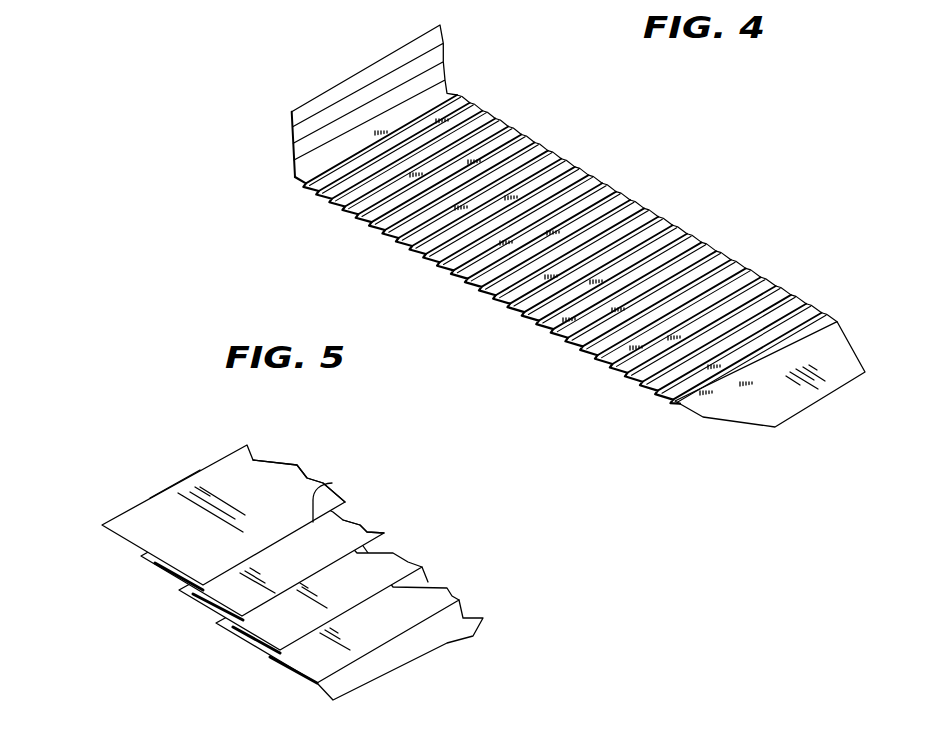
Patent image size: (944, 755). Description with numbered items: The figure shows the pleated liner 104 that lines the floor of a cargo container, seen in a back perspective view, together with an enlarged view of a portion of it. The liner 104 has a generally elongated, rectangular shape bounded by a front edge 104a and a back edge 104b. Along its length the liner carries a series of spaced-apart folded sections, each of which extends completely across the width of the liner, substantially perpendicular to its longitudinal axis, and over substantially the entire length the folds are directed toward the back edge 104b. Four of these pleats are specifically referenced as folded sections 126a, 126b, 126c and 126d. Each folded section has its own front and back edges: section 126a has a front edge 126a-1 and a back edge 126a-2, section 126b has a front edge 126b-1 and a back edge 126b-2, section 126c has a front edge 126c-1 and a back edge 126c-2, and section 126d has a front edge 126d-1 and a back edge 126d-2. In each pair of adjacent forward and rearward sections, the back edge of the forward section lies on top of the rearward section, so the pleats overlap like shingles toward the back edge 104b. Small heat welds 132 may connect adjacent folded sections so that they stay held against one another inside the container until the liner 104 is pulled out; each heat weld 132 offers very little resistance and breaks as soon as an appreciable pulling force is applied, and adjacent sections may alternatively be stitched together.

In FIG. 4, the liner 104 is at (540, 122).
In FIG. 4, the front edge 104a is at (311, 106).
In FIG. 4, the back edge 104b is at (808, 408).
In FIG. 4, the folded section 126a is at (602, 183).
In FIG. 5, the folded section 126a is at (220, 497).
In FIG. 4, the folded section 126b is at (618, 192).
In FIG. 5, the folded section 126b is at (266, 549).
In FIG. 4, the folded section 126c is at (632, 200).
In FIG. 5, the folded section 126c is at (326, 592).
In FIG. 4, the folded section 126d is at (642, 205).
In FIG. 5, the folded section 126d is at (387, 621).
In FIG. 5, the front edge 126a-1 is at (175, 483).
In FIG. 5, the back edge 126a-2 is at (324, 483).
In FIG. 5, the front edge 126b-1 is at (157, 563).
In FIG. 5, the back edge 126b-2 is at (402, 563).
In FIG. 5, the front edge 126c-1 is at (193, 595).
In FIG. 5, the back edge 126c-2 is at (428, 582).
In FIG. 5, the front edge 126d-1 is at (232, 627).
In FIG. 5, the back edge 126d-2 is at (387, 640).
In FIG. 4, the heat weld 132 is at (520, 307).